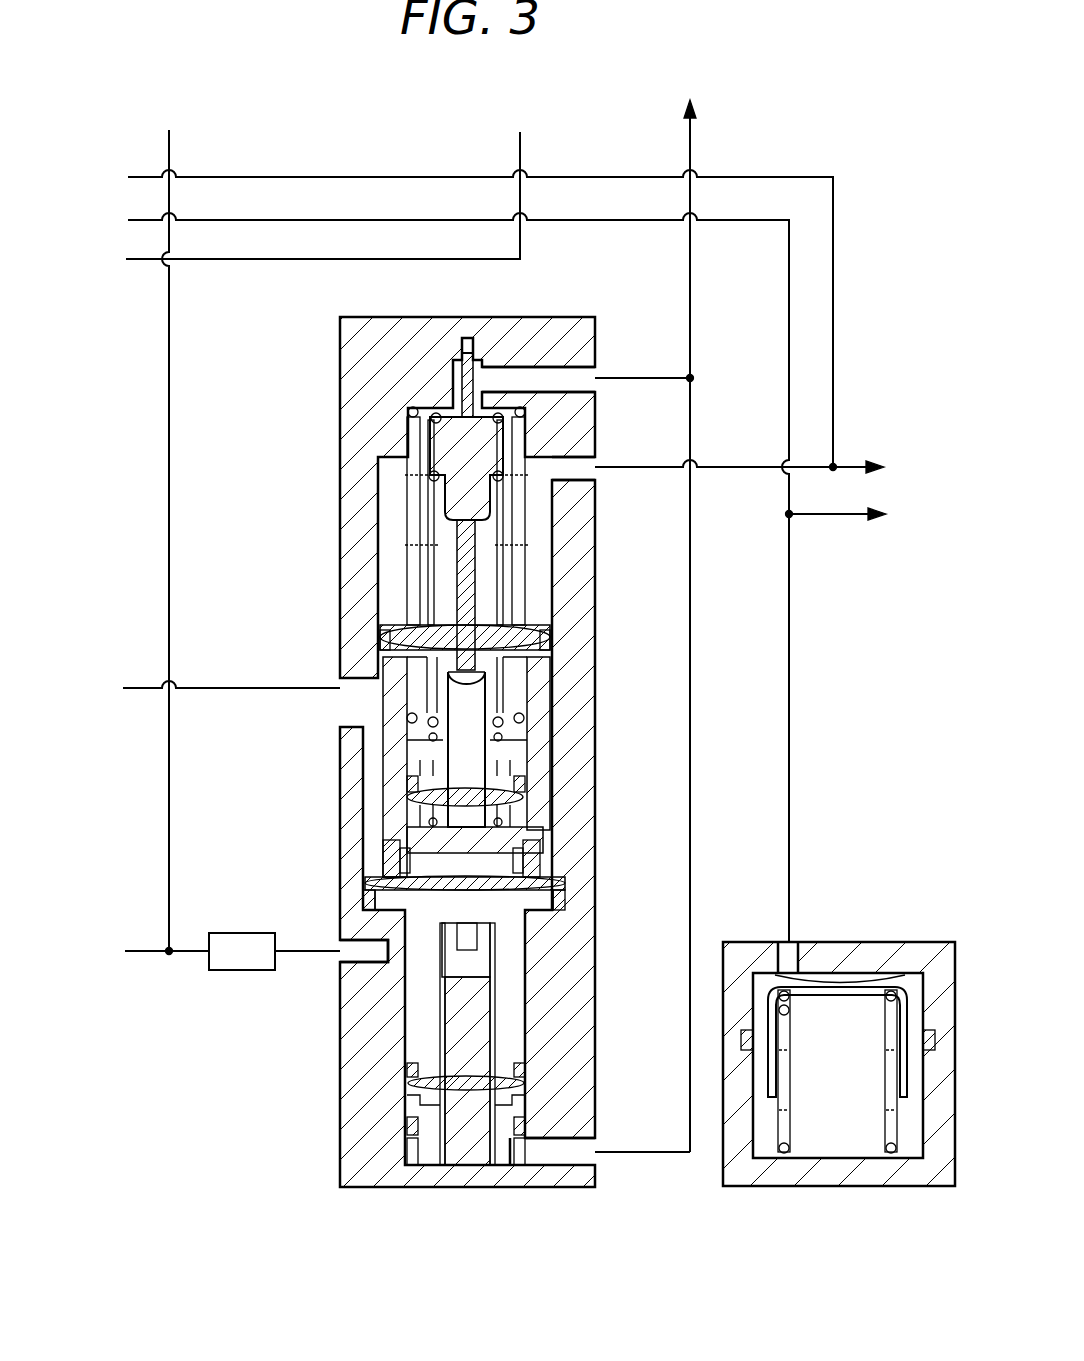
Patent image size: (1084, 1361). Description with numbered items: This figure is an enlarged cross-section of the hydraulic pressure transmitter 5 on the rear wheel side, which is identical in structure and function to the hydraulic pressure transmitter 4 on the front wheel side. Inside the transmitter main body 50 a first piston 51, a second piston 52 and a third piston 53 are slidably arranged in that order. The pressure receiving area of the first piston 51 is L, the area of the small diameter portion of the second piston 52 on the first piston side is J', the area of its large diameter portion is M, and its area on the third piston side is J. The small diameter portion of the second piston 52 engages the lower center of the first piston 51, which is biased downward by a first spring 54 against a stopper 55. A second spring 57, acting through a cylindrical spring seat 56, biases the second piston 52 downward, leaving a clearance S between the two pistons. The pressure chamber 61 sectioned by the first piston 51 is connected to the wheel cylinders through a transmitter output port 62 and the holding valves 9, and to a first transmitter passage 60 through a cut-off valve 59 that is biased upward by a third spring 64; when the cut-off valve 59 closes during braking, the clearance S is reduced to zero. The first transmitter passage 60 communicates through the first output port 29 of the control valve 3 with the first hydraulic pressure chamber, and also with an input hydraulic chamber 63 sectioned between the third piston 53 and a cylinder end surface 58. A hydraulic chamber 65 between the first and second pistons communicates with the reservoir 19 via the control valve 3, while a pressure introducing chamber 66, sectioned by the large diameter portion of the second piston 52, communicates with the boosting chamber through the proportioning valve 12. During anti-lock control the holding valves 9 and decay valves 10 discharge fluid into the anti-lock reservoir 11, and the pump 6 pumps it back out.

The control valve 3 is at (323, 526).
The pump 6 is at (470, 554).
The first output port 29 is at (660, 610).
The holding valve 9 is at (749, 468).
The decay valve 10 is at (851, 516).
The reservoir 19 is at (201, 689).
The hydraulic pressure transmitter 4 is at (222, 952).
The proportioning valve 12 is at (232, 968).
The hydraulic pressure transmitter 5 is at (548, 758).
The transmitter main body 50 is at (365, 1188).
The pressure chamber 61 is at (545, 538).
The cylinder end surface 58 is at (466, 1187).
The first transmitter passage 60 is at (540, 378).
The transmitter output port 62 is at (597, 467).
The input hydraulic chamber 63 is at (520, 1162).
The pressure introducing chamber 66 is at (340, 958).
The cut-off valve 59 is at (460, 462).
The first spring 54 is at (405, 540).
The third spring 64 is at (405, 594).
The cylindrical spring seat 56 is at (400, 720).
The pressure receiving area of the first piston L is at (530, 615).
The stopper 55 is at (385, 648).
The first piston 51 is at (555, 662).
The pressure receiving area of the small diameter portion of the second piston J' is at (525, 801).
The clearance S is at (538, 848).
The hydraulic chamber 65 is at (385, 857).
The pressure receiving area of the large diameter portion of the second piston M is at (555, 880).
The second piston 52 is at (560, 915).
The third piston 53 is at (470, 1030).
The pressure receiving area of the second piston on the third piston side J is at (523, 1112).
The second spring 57 is at (420, 792).
The anti-lock reservoir 11 is at (865, 1187).